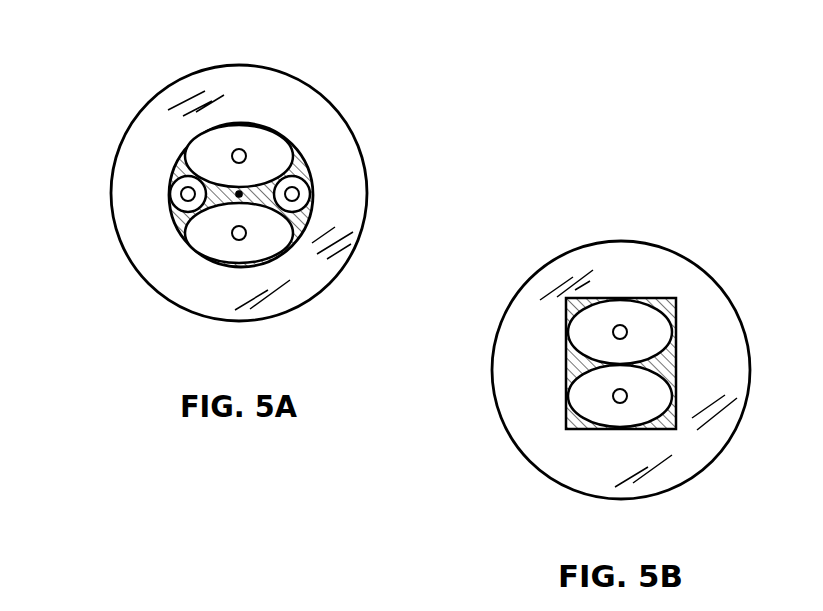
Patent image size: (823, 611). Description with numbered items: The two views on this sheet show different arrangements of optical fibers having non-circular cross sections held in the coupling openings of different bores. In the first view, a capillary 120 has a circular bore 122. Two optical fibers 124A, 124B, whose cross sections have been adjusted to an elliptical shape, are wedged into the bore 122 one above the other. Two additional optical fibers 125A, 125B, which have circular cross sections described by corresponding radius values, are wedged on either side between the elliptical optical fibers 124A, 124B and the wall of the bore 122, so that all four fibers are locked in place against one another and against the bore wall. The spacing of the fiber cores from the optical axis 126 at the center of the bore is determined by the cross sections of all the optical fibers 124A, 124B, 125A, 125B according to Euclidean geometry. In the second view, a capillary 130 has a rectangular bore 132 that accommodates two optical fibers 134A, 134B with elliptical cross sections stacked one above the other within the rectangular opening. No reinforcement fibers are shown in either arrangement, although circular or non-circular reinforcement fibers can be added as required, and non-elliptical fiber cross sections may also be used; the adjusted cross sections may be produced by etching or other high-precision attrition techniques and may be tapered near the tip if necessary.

In FIG. 5A, the capillary 120 is at (332, 101).
In FIG. 5A, the circular bore 122 is at (305, 160).
In FIG. 5A, the optical fiber 124A is at (248, 138).
In FIG. 5A, the optical fiber 124B is at (233, 252).
In FIG. 5A, the optical fiber 125A is at (172, 195).
In FIG. 5A, the optical fiber 125B is at (310, 195).
In FIG. 5A, the optical axis 126 is at (237, 192).
In FIG. 5B, the capillary 130 is at (594, 242).
In FIG. 5B, the rectangular bore 132 is at (566, 360).
In FIG. 5B, the optical fiber 134A is at (650, 331).
In FIG. 5B, the optical fiber 134B is at (590, 400).